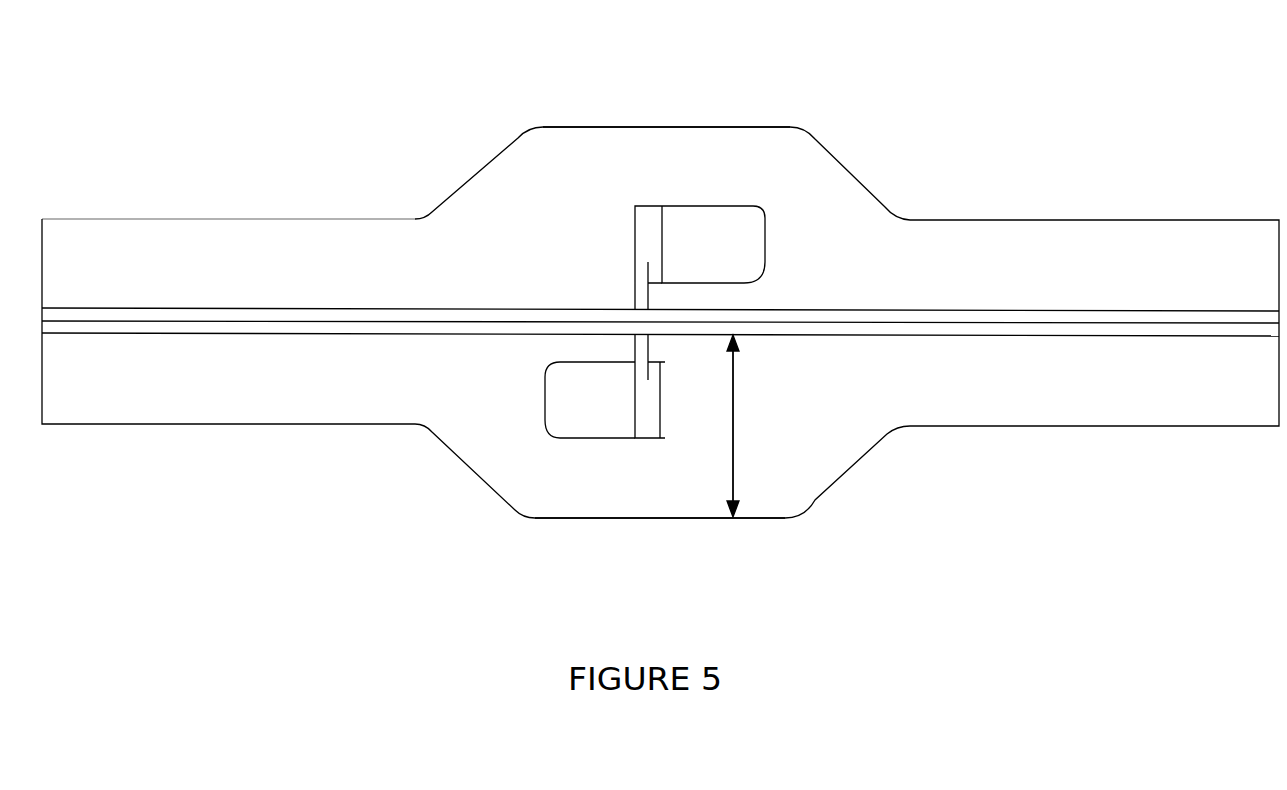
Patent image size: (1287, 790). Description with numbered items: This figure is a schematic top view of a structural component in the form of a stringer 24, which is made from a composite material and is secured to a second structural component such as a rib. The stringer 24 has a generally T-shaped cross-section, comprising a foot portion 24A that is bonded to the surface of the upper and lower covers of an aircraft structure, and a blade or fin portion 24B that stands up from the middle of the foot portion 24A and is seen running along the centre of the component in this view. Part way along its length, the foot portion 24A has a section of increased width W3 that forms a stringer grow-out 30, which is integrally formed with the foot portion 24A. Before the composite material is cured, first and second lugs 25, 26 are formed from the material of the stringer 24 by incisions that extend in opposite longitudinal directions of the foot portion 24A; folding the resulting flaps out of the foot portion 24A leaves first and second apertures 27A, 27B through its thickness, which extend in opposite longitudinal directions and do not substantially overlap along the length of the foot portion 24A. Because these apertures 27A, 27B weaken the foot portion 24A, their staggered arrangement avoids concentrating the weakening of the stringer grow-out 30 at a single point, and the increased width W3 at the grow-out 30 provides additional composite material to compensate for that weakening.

The stringer 24 is at (79, 212).
The foot portion 24A is at (120, 402).
The blade or fin portion 24B is at (192, 308).
The first lug 25 is at (643, 410).
The second lug 26 is at (649, 232).
The first aperture 27A is at (583, 417).
The second aperture 27B is at (722, 233).
The stringer grow-out 30 is at (765, 490).
The increased width W3 is at (753, 426).